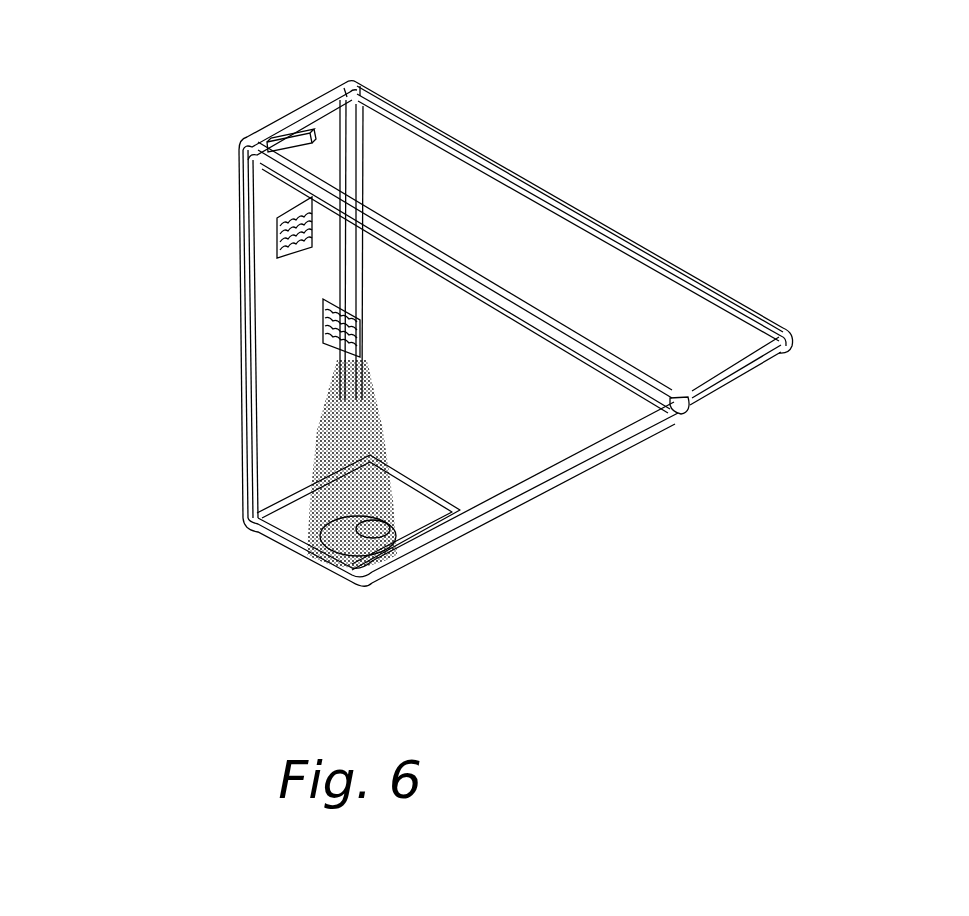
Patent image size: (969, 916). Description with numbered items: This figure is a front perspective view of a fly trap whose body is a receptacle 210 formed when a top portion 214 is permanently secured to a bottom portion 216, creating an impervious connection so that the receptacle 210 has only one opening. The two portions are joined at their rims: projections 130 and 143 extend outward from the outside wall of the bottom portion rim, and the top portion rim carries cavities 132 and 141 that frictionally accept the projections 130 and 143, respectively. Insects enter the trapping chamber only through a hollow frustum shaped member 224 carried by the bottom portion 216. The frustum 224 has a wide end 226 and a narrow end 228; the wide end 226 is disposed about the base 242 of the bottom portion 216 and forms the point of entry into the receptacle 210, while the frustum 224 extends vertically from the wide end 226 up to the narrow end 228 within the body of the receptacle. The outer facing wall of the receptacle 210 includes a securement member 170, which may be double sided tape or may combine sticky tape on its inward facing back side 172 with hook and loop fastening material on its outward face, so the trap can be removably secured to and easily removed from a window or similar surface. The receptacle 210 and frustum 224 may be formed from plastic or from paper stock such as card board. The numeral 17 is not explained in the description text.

The receptacle 210 is at (202, 282).
The cavity 141 is at (334, 89).
The projection 143 is at (287, 125).
The cavity 132 is at (695, 272).
The projection 130 is at (741, 384).
The top portion 214 is at (538, 242).
The securement member 170 is at (348, 320).
The upper nozzle array 17 is at (277, 231).
The back side 172 is at (348, 317).
The narrow end 228 is at (340, 363).
The bottom portion 216 is at (470, 442).
The wide end 226 is at (313, 553).
The hollow frustum shaped member 224 is at (317, 480).
The base 242 is at (415, 524).